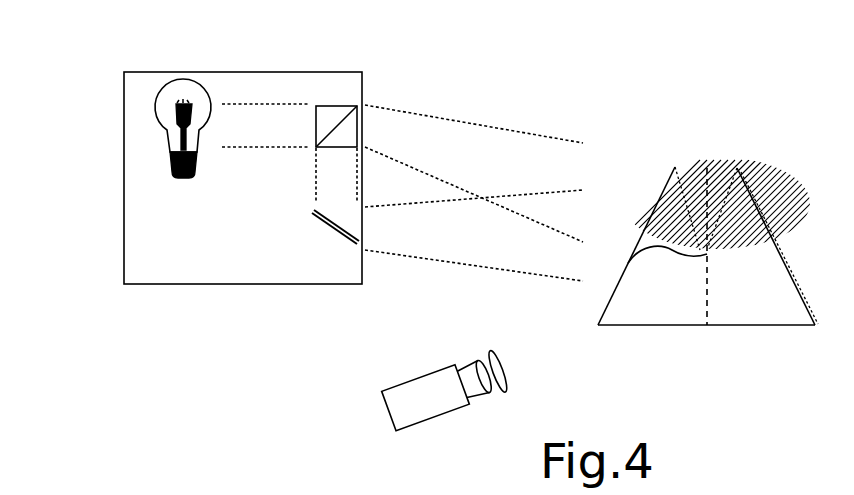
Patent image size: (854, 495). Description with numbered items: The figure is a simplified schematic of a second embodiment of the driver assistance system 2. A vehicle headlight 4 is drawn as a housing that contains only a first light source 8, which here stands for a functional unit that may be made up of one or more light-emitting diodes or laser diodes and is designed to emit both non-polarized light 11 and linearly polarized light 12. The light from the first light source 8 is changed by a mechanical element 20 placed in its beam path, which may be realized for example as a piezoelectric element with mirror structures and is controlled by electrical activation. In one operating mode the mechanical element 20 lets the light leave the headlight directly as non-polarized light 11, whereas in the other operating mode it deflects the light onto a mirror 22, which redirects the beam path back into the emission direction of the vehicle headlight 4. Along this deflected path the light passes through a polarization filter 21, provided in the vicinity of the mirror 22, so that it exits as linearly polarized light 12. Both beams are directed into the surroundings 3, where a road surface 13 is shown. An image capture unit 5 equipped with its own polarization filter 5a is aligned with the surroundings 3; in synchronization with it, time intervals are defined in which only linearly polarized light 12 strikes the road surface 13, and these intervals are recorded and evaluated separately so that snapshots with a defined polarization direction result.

The driver assistance system 2 is at (84, 77).
The surroundings 3 is at (625, 123).
The vehicle headlight 4 is at (207, 274).
The image capture unit 5 is at (442, 412).
The polarization filter 5a is at (508, 373).
The first light source 8 is at (200, 133).
The non-polarized light 11 is at (492, 169).
The linearly polarized light 12 is at (492, 249).
The road surface 13 is at (741, 303).
The mechanical element 20 is at (331, 108).
The polarization filter 21 is at (351, 230).
The mirror 22 is at (318, 217).